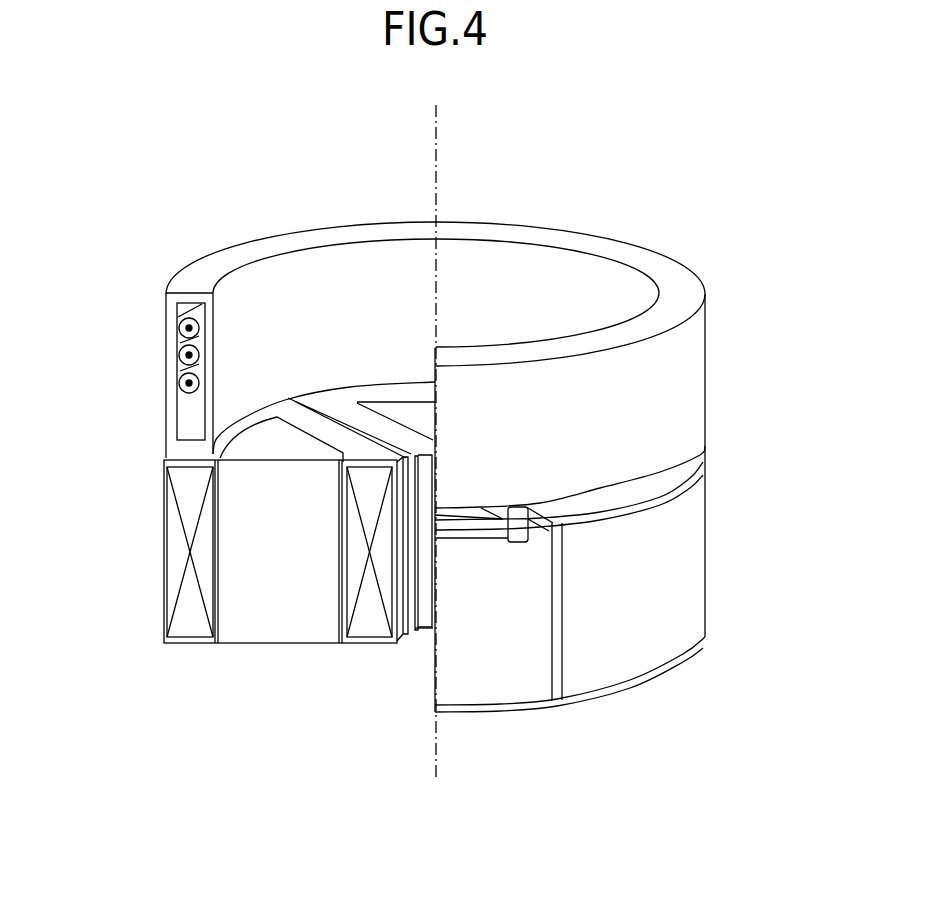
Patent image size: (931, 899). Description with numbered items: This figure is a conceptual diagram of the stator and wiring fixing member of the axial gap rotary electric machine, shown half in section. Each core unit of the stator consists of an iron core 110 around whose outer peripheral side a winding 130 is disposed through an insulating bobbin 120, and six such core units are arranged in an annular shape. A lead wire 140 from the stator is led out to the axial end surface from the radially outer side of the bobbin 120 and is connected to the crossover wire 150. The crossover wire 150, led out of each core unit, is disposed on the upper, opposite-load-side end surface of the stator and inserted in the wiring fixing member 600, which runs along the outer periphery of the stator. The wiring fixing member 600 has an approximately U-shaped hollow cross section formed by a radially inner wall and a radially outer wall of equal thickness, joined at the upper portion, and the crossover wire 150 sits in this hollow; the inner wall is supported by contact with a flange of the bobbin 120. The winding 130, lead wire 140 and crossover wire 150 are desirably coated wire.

The iron core 110 is at (237, 578).
The insulating bobbin 120 is at (185, 453).
The winding 130 is at (347, 630).
The lead wire 140 is at (507, 532).
The crossover wire 150 is at (185, 357).
The wiring fixing member 600 is at (707, 372).